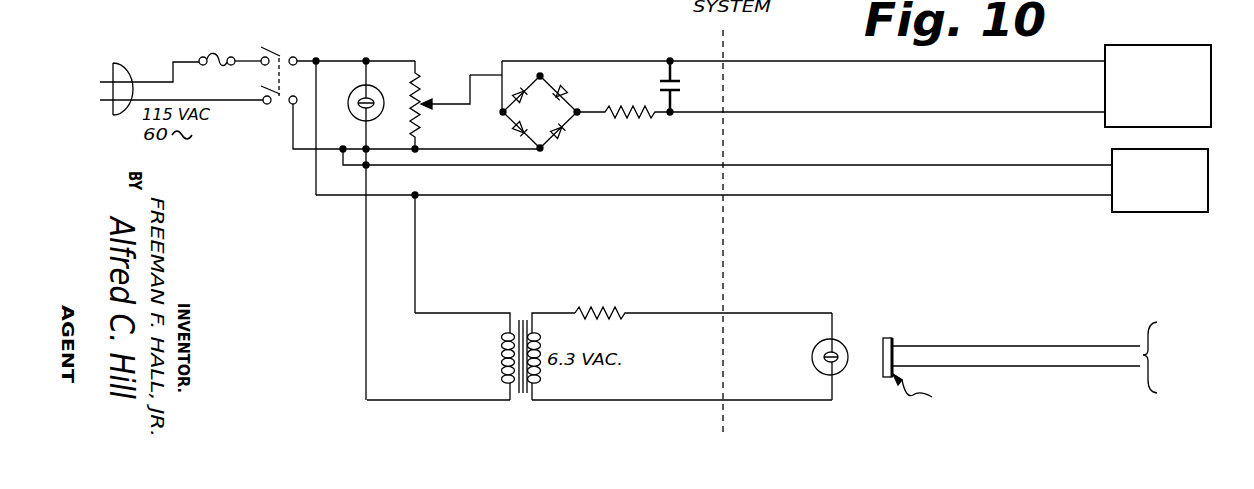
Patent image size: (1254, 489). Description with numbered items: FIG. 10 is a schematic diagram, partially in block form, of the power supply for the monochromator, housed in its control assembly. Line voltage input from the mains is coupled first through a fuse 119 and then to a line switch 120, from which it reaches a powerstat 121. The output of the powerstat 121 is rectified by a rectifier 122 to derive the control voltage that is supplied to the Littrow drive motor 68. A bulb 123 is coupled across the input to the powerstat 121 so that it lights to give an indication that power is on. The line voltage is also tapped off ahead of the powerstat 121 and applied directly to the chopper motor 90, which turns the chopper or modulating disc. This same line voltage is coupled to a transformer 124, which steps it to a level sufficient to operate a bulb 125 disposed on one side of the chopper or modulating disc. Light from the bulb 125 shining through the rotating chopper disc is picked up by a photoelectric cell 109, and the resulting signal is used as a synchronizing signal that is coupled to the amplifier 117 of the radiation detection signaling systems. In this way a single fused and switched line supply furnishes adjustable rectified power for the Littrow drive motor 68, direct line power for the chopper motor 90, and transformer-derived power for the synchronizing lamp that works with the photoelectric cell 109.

The Littrow drive motor 68 is at (1174, 86).
The chopper motor 90 is at (1208, 172).
The photoelectric cell 109 is at (893, 340).
The amplifier 117 is at (1198, 357).
The fuse 119 is at (226, 43).
The line switch 120 is at (278, 48).
The powerstat 121 is at (419, 79).
The rectifier 122 is at (558, 84).
The bulb 123 is at (352, 97).
The transformer 124 is at (520, 320).
The bulb 125 is at (812, 352).